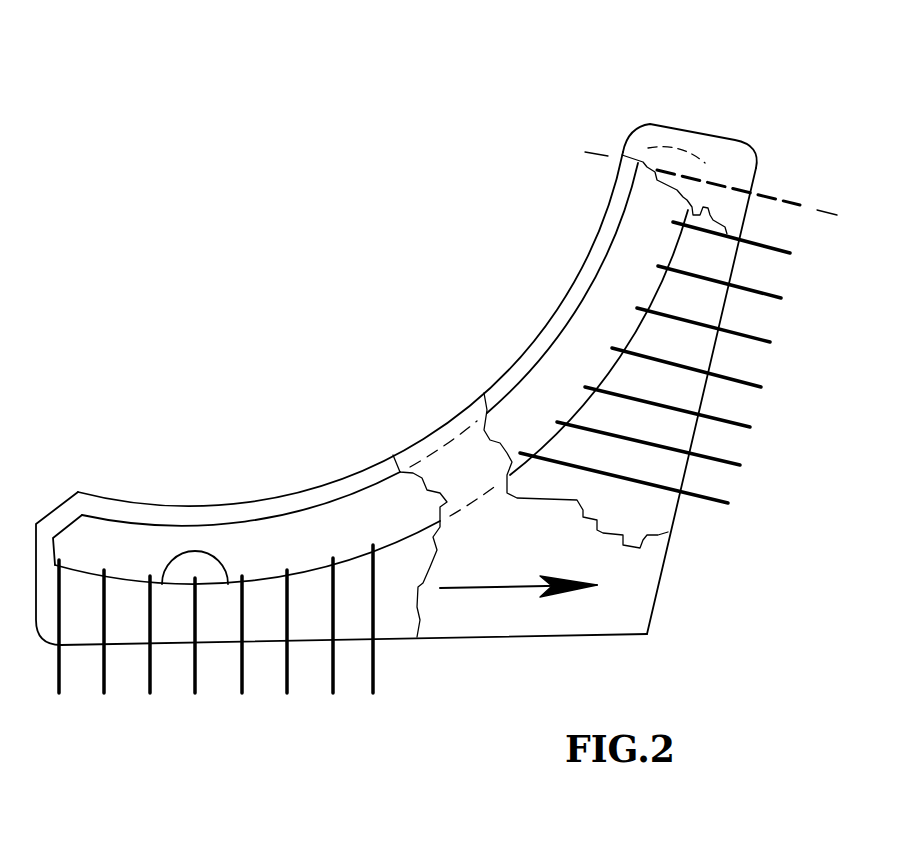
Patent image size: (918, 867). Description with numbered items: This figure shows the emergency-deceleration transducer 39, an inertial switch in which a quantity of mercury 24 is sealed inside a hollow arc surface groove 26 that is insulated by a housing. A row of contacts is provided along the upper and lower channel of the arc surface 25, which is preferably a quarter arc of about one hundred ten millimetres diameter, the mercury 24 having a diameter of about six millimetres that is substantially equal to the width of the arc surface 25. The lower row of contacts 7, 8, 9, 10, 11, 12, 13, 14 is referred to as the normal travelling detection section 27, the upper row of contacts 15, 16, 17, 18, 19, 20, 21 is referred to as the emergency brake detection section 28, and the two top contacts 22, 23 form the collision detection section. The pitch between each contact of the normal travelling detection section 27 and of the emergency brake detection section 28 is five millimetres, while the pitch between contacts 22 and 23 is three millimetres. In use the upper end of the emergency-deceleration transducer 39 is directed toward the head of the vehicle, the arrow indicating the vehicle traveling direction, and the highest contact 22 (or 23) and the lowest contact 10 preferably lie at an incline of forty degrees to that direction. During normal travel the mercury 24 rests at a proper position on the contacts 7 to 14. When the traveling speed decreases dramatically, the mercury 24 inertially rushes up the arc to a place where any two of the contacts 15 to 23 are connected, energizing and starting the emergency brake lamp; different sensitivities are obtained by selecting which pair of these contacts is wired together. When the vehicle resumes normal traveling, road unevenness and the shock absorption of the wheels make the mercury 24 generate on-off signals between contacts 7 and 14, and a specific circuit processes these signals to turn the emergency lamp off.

The contact 7 is at (42, 629).
The contact 8 is at (102, 652).
The contact 9 is at (147, 655).
The contact 10 is at (193, 656).
The contact 11 is at (240, 655).
The contact 12 is at (287, 652).
The contact 13 is at (330, 643).
The contact 14 is at (396, 619).
The contact 15 is at (624, 499).
The contact 16 is at (668, 456).
The contact 17 is at (688, 416).
The contact 18 is at (706, 376).
The contact 19 is at (723, 336).
The contact 20 is at (739, 294).
The contact 21 is at (745, 234).
The contact 22 is at (775, 193).
The contact 23 is at (788, 60).
The mercury 24 is at (185, 550).
The arc surface 25 is at (412, 532).
The hollow arc surface groove 26 is at (583, 350).
The normal travelling detection section 27 is at (222, 687).
The emergency brake detection section 28 is at (680, 401).
The emergency-deceleration transducer 39 is at (635, 605).